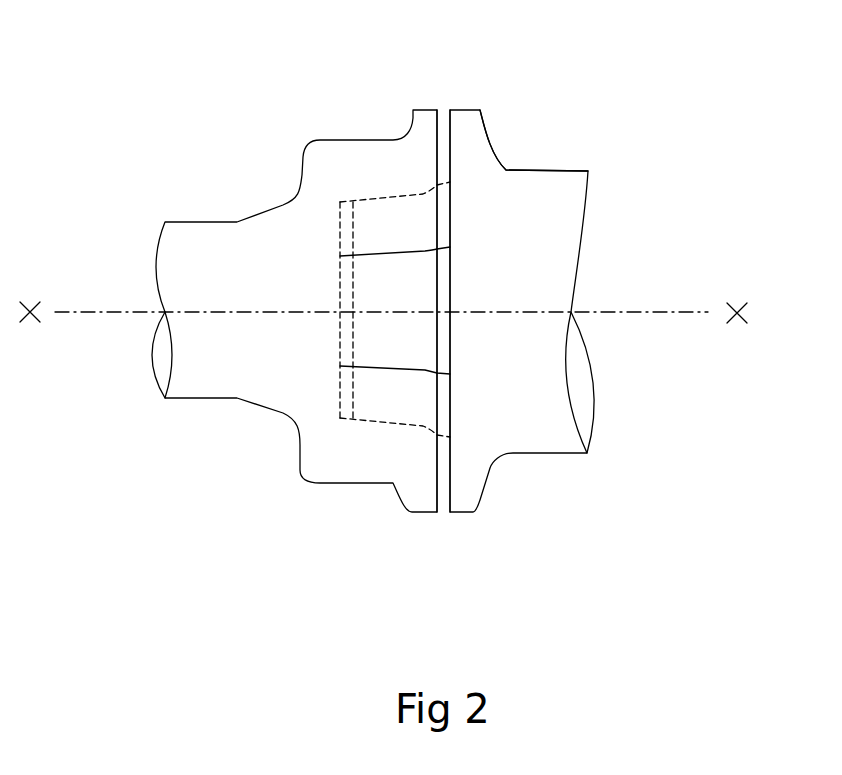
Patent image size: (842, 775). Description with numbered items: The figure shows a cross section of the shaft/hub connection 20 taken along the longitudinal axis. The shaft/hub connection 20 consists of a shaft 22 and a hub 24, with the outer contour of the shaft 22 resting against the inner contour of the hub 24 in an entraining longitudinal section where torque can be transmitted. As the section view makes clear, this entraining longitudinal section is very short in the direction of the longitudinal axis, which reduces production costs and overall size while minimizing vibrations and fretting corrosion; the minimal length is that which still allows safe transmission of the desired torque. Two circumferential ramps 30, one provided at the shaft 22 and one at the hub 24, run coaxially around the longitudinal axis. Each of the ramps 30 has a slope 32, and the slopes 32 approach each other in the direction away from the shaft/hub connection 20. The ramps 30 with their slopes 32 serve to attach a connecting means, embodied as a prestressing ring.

The shaft/hub connection 20 is at (393, 553).
The shaft 22 is at (543, 447).
The hub 24 is at (208, 378).
The circumferential ramp 30 is at (465, 130).
The slope 32 is at (507, 177).